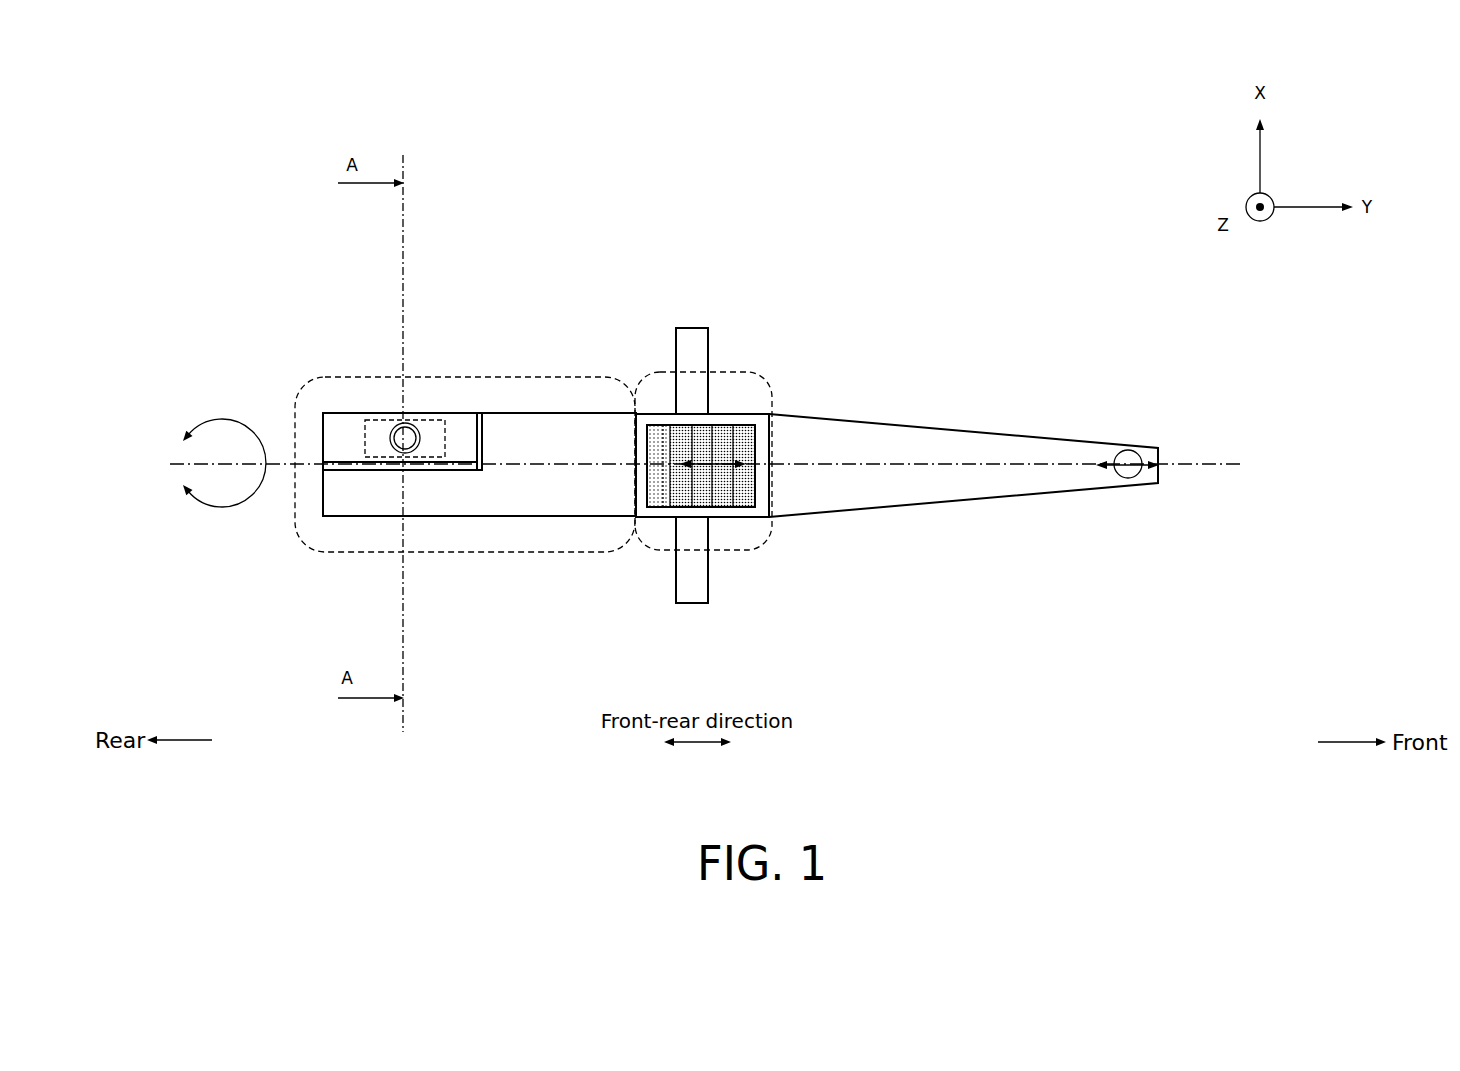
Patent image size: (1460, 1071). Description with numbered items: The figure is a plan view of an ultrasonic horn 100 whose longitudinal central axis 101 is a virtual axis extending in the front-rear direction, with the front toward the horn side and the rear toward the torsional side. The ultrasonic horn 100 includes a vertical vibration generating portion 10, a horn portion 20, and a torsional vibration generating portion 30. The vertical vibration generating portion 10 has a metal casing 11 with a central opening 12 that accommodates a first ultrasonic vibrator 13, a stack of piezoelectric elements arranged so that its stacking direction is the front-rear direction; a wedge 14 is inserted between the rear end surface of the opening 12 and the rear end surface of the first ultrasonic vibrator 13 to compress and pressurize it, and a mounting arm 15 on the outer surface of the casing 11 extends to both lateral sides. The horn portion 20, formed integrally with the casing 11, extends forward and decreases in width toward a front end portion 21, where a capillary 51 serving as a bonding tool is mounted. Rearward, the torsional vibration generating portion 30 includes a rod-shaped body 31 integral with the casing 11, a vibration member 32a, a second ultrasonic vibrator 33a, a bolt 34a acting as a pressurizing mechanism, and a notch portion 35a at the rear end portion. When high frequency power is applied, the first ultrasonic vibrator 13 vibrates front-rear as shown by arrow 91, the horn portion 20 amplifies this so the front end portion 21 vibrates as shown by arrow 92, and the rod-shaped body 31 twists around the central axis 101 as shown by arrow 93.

The ultrasonic horn 100 is at (223, 156).
The longitudinal central axis 101 is at (283, 462).
The arrow 93 is at (198, 417).
The torsional vibration generating portion 30 is at (515, 375).
The rod-shaped body 31 is at (580, 412).
The vibration member 32a is at (328, 412).
The second ultrasonic vibrator 33a is at (363, 421).
The bolt 34a is at (397, 425).
The notch portion 35a is at (478, 413).
The vertical vibration generating portion 10 is at (737, 375).
The casing 11 is at (753, 413).
The opening 12 is at (755, 443).
The first ultrasonic vibrator 13 is at (745, 493).
The wedge 14 is at (660, 490).
The mounting arm 15 is at (676, 325).
The arrow 91 is at (722, 468).
The horn portion 20 is at (930, 428).
The front end portion 21 is at (1150, 447).
The capillary 51 is at (1132, 473).
The arrow 92 is at (1103, 468).